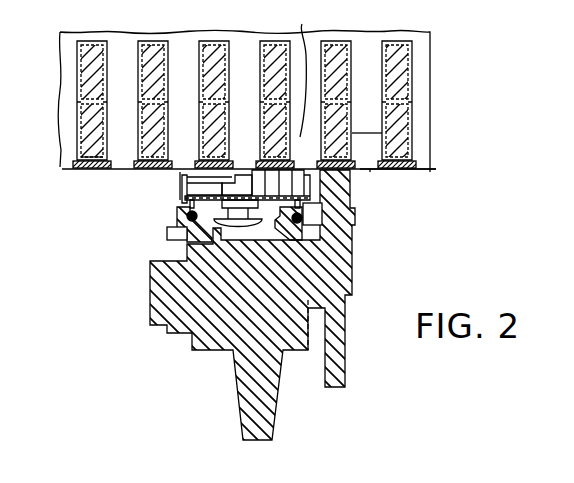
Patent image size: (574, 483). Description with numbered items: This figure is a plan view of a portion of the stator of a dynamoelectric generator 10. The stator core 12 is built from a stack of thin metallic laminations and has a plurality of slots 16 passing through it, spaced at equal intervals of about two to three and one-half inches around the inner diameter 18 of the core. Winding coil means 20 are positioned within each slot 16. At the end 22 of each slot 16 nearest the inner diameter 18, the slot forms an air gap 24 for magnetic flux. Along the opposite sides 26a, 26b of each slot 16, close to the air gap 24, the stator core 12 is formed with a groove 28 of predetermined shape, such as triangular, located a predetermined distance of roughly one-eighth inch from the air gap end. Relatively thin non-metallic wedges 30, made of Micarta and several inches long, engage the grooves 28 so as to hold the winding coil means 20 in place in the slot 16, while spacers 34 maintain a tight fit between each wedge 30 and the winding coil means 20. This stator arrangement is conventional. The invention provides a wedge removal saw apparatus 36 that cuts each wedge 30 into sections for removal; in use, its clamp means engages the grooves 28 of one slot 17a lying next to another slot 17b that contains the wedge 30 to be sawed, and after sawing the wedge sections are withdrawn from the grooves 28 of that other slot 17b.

The dynamoelectric generator 10 is at (507, 93).
The stator core 12 is at (431, 49).
The slots 16 is at (108, 48).
The slot 17a is at (317, 71).
The slot 17b is at (382, 133).
The inner diameter 18 is at (100, 148).
The winding coil means 20 is at (92, 64).
The end 22 is at (92, 171).
The air gap 24 is at (398, 172).
The side of slot 26a is at (64, 170).
The side of slot 26b is at (117, 170).
The groove 28 is at (378, 172).
The non-metallic wedges 30 is at (158, 171).
The spacers 34 is at (398, 166).
The wedge removal saw apparatus 36 is at (215, 330).